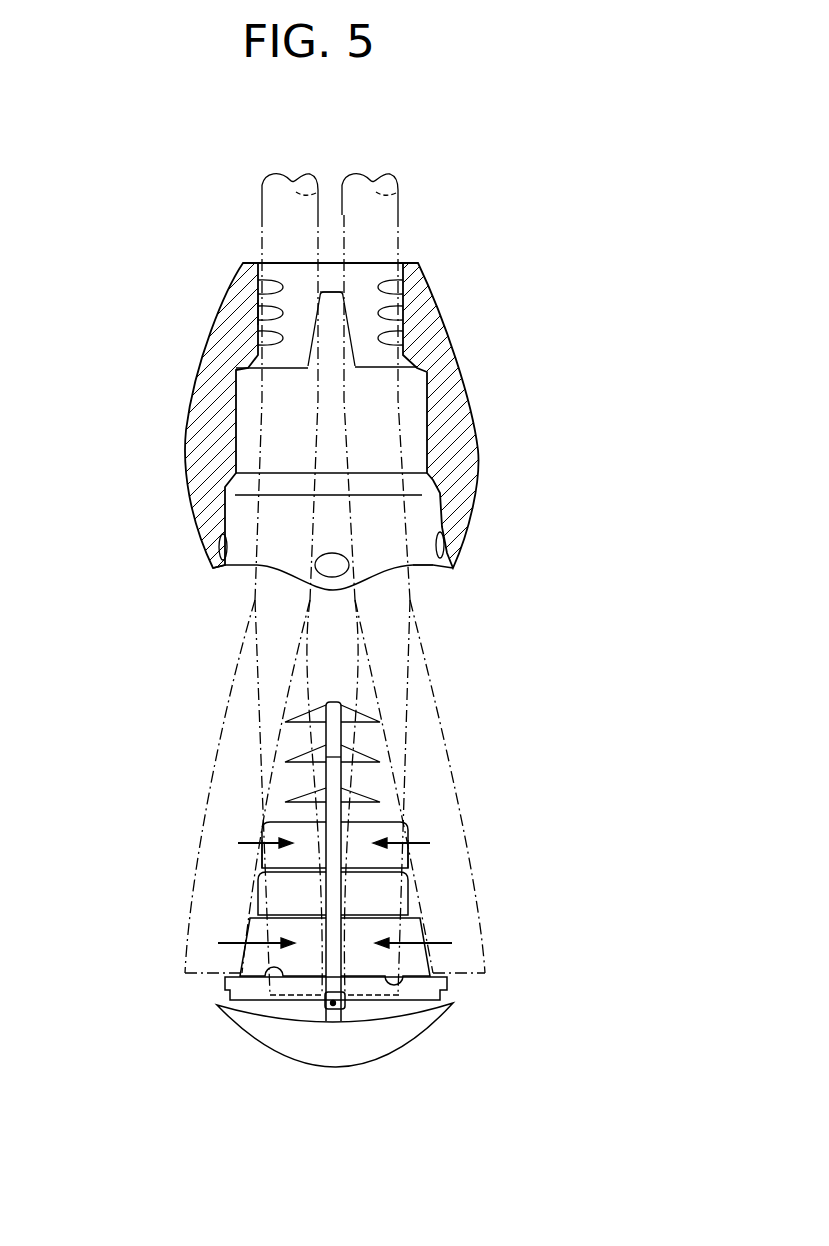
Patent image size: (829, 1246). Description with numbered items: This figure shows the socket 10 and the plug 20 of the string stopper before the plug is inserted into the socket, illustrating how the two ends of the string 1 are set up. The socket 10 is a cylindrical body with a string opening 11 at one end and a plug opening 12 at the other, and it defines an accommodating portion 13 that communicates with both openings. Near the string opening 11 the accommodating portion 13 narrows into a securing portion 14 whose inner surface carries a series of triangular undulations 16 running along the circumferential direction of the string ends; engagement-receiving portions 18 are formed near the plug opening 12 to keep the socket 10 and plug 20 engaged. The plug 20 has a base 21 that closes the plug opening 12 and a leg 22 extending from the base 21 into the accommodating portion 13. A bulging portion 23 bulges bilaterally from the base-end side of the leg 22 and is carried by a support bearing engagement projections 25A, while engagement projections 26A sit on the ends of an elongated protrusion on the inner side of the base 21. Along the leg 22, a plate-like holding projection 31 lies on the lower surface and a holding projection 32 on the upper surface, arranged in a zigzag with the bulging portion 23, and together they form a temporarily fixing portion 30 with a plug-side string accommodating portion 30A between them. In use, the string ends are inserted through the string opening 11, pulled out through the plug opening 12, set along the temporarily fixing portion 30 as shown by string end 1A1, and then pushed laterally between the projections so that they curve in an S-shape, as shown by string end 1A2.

The string 1 is at (363, 140).
The socket 10 is at (462, 376).
The string opening 11 is at (375, 262).
The plug opening 12 is at (427, 572).
The accommodating portion 13 is at (385, 432).
The securing portion 14 is at (297, 290).
The triangular undulations 16 is at (258, 348).
The engagement-receiving portions 18 is at (333, 556).
The plug 20 is at (286, 1049).
The base 21 is at (263, 1053).
The leg 22 is at (333, 703).
The bulging portion 23 is at (420, 925).
The engagement projections 25A is at (223, 982).
The engagement projections 26A is at (332, 1008).
The temporarily fixing portion 30 is at (369, 884).
The plug-side string accommodating portion 30A is at (293, 858).
The holding projection 31 is at (407, 820).
The holding projection 32 is at (407, 885).
The string end 1A1 is at (487, 965).
The string end 1A2 is at (373, 995).